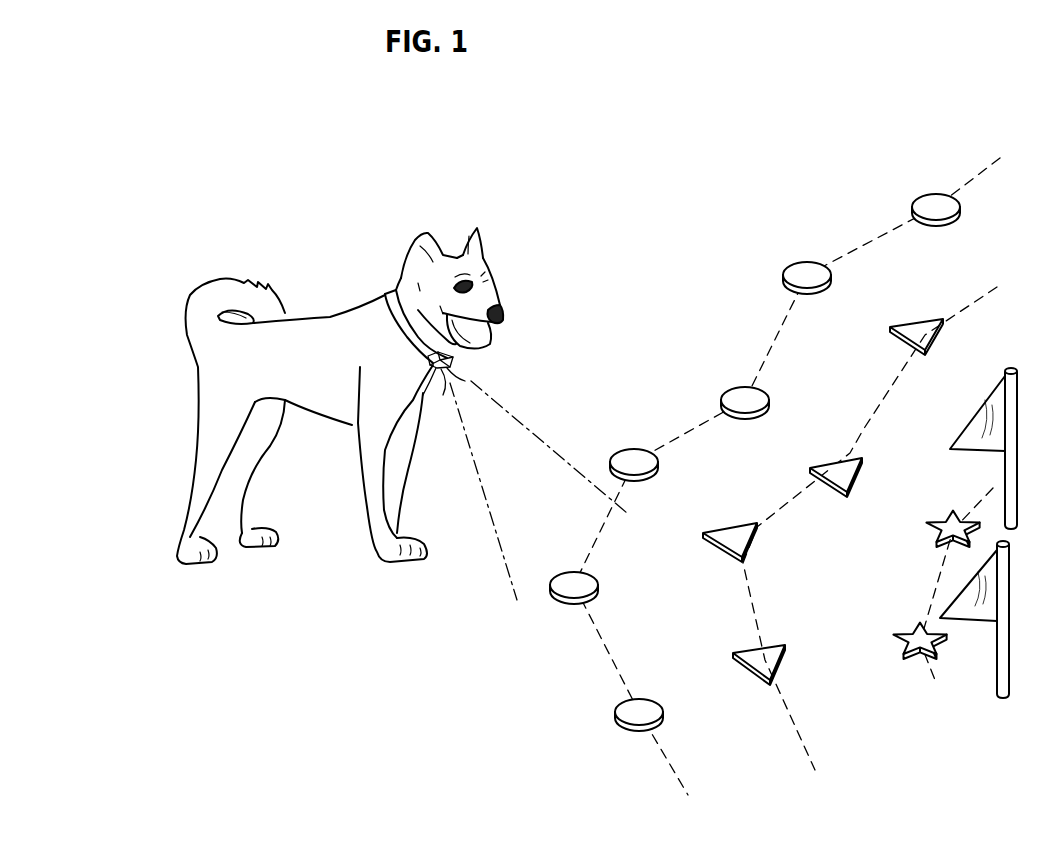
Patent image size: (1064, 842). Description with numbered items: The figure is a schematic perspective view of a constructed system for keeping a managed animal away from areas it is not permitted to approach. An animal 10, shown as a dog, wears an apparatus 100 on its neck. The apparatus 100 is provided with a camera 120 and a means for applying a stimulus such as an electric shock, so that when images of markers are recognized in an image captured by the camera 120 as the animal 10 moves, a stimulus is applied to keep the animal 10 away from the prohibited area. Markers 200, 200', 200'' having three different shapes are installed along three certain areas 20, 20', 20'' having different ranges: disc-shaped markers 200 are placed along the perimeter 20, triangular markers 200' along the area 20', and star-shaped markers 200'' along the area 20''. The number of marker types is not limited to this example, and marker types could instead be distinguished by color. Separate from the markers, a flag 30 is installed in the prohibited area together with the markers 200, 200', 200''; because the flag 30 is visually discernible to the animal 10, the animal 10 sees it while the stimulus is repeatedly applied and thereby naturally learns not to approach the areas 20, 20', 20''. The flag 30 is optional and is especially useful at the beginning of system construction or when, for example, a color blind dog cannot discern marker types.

The animal 10 is at (323, 327).
The apparatus 100 is at (443, 395).
The camera 120 is at (465, 380).
The perimeter (certain area) 20 is at (787, 476).
The marker 200 is at (755, 462).
The certain area 20' is at (870, 528).
The marker 200' is at (823, 502).
The certain area 20'' is at (951, 575).
The marker 200'' is at (909, 585).
The flag 30 is at (980, 413).